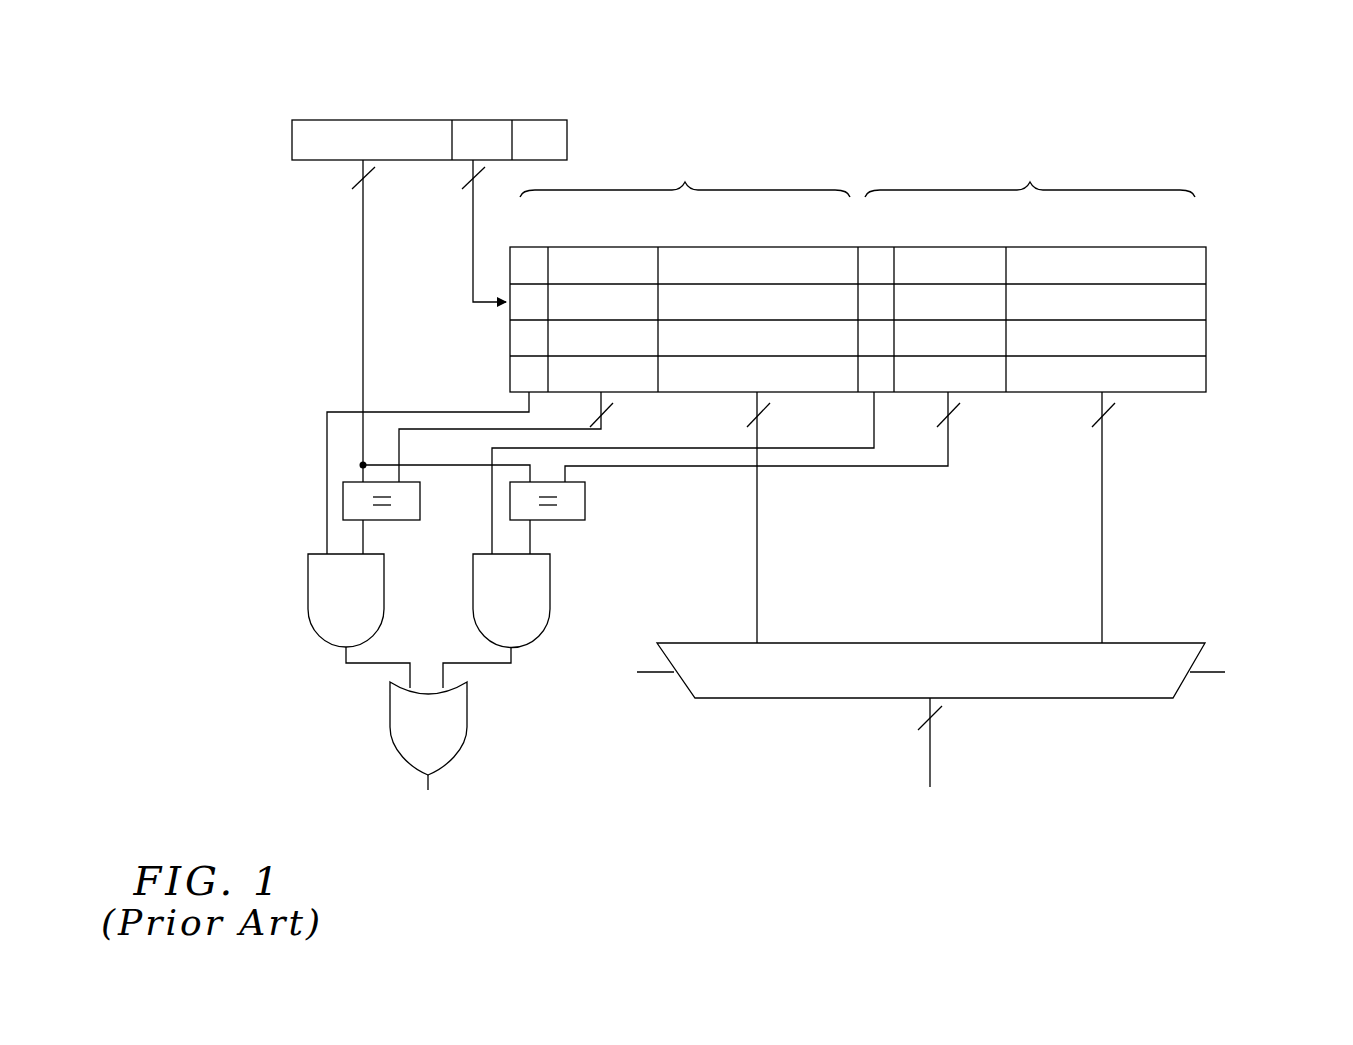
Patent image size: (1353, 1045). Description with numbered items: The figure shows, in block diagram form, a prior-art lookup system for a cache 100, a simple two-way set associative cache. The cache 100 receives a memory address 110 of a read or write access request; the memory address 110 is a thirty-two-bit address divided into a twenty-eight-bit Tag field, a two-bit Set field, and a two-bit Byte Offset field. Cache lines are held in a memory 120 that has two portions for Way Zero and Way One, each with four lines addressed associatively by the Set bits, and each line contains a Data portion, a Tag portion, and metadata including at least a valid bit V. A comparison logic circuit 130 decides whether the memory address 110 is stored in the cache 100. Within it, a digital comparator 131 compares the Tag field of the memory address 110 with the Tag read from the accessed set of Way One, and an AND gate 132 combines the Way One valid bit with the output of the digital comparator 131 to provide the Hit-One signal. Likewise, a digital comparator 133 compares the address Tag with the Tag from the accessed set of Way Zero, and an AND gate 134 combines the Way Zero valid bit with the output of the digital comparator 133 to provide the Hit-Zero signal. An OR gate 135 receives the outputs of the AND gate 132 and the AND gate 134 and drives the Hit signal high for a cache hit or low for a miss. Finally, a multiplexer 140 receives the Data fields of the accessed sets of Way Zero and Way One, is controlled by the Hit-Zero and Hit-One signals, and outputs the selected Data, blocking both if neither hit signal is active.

The cache 100 is at (200, 68).
The memory address 110 is at (567, 128).
The memory 120 is at (1232, 230).
The comparison logic circuit 130 is at (268, 480).
The digital comparator 131 is at (388, 521).
The AND gate 132 is at (308, 598).
The digital comparator 133 is at (555, 521).
The AND gate 134 is at (550, 598).
The OR gate 135 is at (390, 728).
The multiplexer 140 is at (1138, 643).